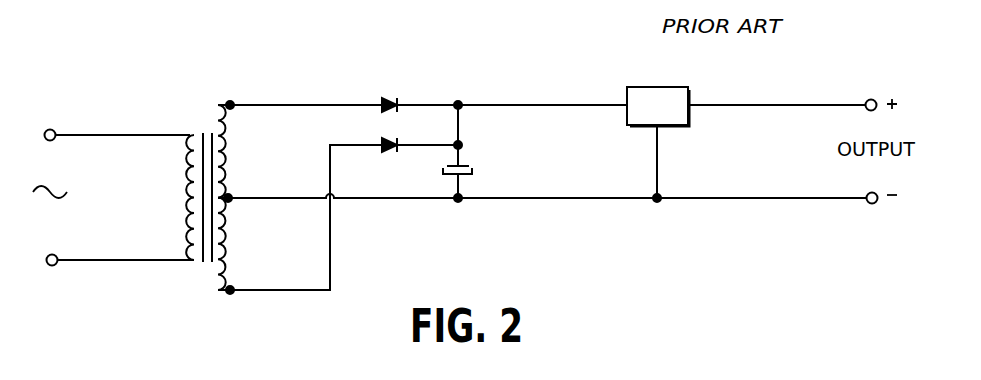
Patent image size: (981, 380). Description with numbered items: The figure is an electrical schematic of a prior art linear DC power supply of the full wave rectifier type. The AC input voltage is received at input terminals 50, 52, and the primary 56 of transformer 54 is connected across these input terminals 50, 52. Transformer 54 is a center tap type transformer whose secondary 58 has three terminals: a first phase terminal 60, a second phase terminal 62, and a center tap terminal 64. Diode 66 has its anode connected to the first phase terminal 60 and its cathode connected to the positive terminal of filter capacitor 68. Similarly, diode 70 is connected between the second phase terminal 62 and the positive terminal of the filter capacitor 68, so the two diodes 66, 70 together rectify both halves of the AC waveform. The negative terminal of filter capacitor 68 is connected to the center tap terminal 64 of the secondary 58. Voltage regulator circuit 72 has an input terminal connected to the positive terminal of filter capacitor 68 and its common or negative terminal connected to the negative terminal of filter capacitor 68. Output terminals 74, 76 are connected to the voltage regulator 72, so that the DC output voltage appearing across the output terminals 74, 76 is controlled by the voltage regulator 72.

The input terminal 50 is at (52, 129).
The input terminal 52 is at (56, 266).
The transformer 54 is at (203, 122).
The primary 56 is at (190, 132).
The secondary 58 is at (220, 103).
The first phase terminal 60 is at (232, 104).
The second phase terminal 62 is at (232, 293).
The center tap terminal 64 is at (230, 196).
The diode 66 is at (386, 99).
The filter capacitor 68 is at (474, 171).
The diode 70 is at (388, 140).
The voltage regulator circuit 72 is at (665, 87).
The output terminal 74 is at (866, 100).
The output terminal 76 is at (870, 204).